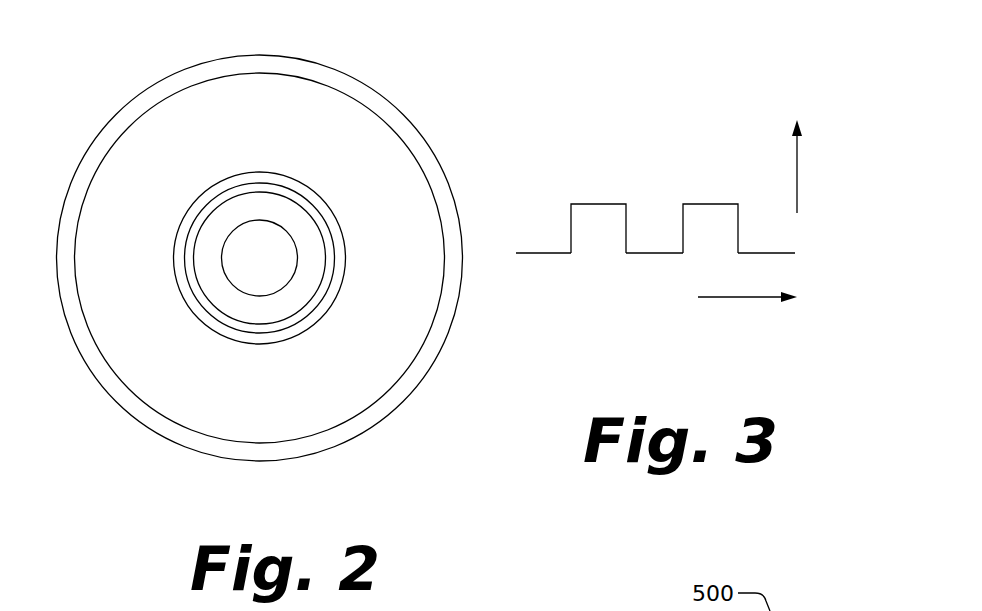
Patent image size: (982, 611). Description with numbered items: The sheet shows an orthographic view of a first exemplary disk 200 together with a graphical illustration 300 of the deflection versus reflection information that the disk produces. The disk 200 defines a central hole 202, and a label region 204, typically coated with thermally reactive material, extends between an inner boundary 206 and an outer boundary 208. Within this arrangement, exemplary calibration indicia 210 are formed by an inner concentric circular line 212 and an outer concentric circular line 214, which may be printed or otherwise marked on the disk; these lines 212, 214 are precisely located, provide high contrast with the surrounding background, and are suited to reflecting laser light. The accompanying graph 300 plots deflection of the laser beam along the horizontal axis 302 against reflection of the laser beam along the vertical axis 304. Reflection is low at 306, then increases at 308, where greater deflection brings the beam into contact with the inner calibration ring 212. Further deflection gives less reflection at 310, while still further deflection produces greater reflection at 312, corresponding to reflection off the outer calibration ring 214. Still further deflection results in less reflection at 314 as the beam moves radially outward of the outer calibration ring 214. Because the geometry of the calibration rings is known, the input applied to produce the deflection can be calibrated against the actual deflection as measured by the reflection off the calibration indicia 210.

In FIG. 2, the disk 200 is at (293, 253).
In FIG. 2, the central hole 202 is at (260, 259).
In FIG. 2, the label region 204 is at (220, 122).
In FIG. 2, the inner boundary 206 is at (218, 185).
In FIG. 2, the outer boundary 208 is at (133, 125).
In FIG. 2, the calibration indicia 210 is at (306, 192).
In FIG. 2, the inner concentric circular line 212 is at (312, 209).
In FIG. 2, the outer concentric circular line 214 is at (325, 218).
In FIG. 3, the graphical illustration 300 is at (672, 192).
In FIG. 3, the horizontal axis 302 is at (778, 310).
In FIG. 3, the vertical axis 304 is at (799, 117).
In FIG. 3, the low reflection region 306 is at (550, 255).
In FIG. 3, the increased reflection region 308 is at (597, 206).
In FIG. 3, the reduced reflection region 310 is at (655, 252).
In FIG. 3, the greater reflection region 312 is at (712, 203).
In FIG. 3, the reduced reflection region 314 is at (760, 254).